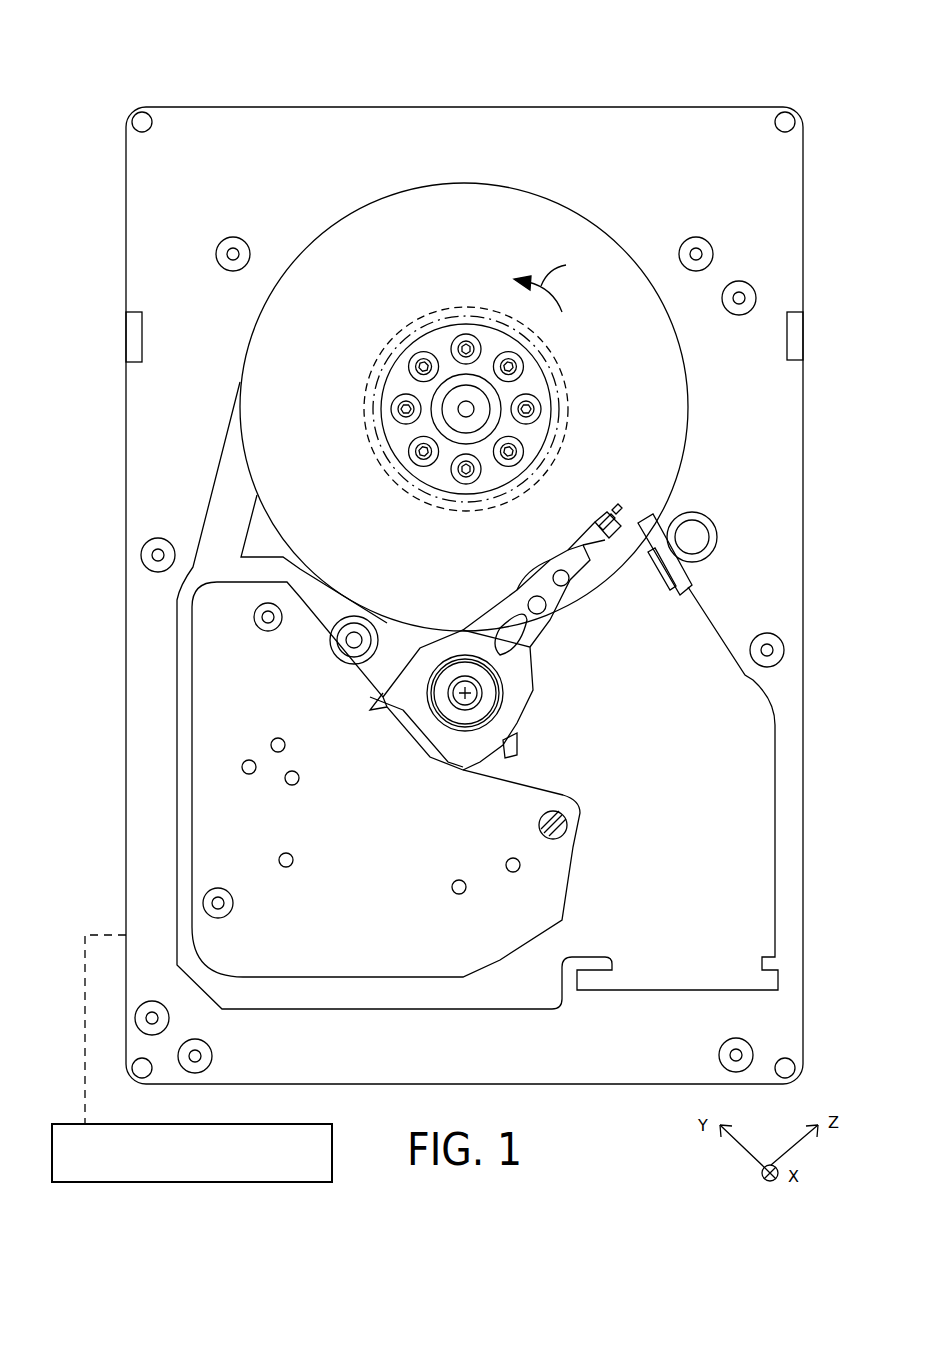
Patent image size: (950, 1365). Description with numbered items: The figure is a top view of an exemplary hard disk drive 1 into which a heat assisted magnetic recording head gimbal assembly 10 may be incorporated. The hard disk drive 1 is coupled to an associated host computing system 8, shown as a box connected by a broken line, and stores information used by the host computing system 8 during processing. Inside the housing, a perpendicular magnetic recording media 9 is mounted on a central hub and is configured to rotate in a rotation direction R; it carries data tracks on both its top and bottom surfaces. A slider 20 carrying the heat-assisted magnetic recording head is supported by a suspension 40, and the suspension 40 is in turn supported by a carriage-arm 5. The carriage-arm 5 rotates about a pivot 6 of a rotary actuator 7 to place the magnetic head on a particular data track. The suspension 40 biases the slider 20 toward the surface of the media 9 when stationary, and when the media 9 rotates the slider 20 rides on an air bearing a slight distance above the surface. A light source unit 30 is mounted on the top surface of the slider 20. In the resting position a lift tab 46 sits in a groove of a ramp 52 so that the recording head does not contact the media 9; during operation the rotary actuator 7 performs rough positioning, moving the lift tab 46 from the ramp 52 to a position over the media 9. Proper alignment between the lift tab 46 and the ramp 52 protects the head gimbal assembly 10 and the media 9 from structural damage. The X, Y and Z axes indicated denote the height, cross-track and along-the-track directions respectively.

The hard disk drive 1 is at (378, 30).
The carriage-arm 5 is at (543, 623).
The pivot 6 is at (475, 690).
The rotary actuator 7 is at (492, 722).
The host computing system 8 is at (192, 1153).
The perpendicular magnetic recording media 9 is at (495, 230).
The heat assisted magnetic recording head gimbal assembly 10 is at (580, 575).
The slider 20 is at (598, 535).
The light source unit 30 is at (597, 522).
The suspension 40 is at (577, 557).
The lift tab 46 is at (618, 514).
The ramp 52 is at (678, 595).